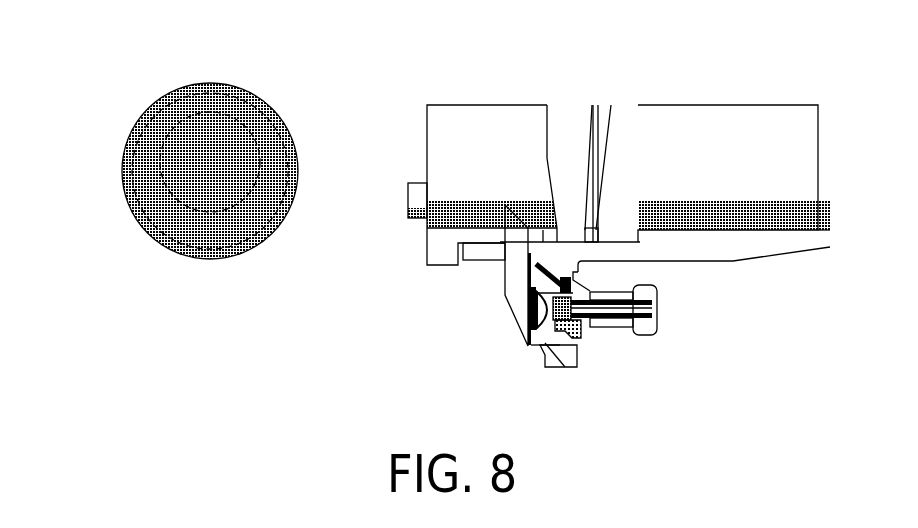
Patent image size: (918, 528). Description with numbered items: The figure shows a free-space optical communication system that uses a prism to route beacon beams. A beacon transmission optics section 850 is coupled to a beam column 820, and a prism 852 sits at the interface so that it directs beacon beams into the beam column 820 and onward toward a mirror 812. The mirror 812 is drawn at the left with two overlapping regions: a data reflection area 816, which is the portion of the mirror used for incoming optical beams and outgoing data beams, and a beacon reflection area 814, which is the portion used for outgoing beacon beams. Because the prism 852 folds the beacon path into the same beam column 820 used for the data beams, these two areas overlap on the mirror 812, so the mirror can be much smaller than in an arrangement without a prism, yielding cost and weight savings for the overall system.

The mirror 812 is at (170, 237).
The beacon reflection area 814 is at (217, 110).
The data reflection area 816 is at (167, 125).
The beam column 820 is at (823, 85).
The beacon transmission optics section 850 is at (672, 372).
The prism 852 is at (517, 278).